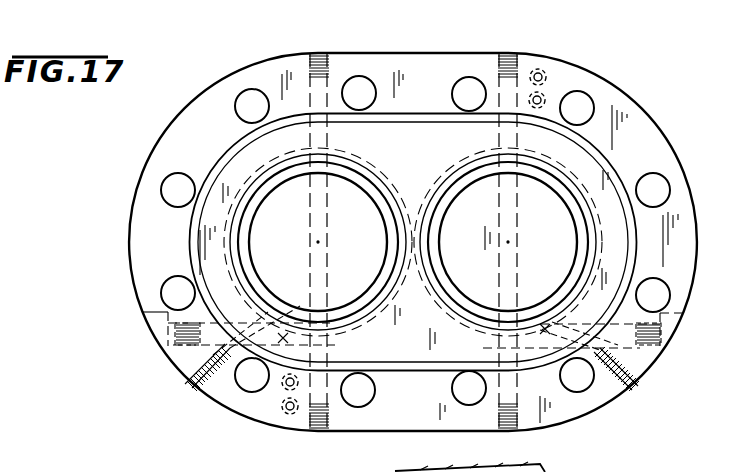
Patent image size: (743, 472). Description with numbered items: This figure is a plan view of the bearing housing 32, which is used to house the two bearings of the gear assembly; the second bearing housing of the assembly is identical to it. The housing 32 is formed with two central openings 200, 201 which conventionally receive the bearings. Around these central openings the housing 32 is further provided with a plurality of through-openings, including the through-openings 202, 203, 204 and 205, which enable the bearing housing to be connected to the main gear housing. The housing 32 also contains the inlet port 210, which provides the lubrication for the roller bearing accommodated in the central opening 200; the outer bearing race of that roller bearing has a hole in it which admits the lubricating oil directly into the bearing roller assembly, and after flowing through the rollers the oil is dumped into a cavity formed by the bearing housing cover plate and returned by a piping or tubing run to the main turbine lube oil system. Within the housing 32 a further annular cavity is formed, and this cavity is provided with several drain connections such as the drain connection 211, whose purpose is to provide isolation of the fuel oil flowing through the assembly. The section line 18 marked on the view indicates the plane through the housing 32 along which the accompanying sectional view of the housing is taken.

The section line 18- 18 is at (318, 47).
The bearing housing 32 is at (624, 76).
The central opening 200 is at (354, 171).
The central opening 201 is at (457, 189).
The through-opening 202 is at (250, 96).
The through-opening 203 is at (364, 86).
The through-opening 204 is at (248, 380).
The through-opening 205 is at (363, 396).
The inlet port 210 is at (328, 80).
The drain connection 211 is at (334, 398).